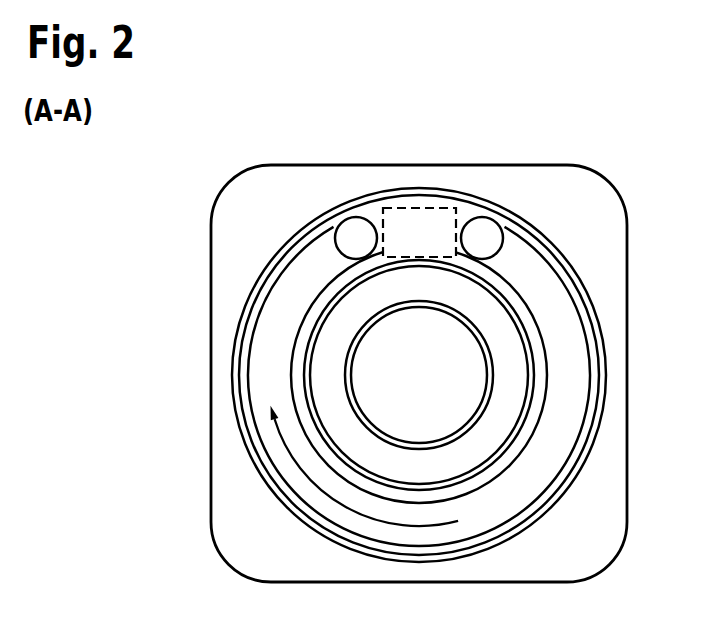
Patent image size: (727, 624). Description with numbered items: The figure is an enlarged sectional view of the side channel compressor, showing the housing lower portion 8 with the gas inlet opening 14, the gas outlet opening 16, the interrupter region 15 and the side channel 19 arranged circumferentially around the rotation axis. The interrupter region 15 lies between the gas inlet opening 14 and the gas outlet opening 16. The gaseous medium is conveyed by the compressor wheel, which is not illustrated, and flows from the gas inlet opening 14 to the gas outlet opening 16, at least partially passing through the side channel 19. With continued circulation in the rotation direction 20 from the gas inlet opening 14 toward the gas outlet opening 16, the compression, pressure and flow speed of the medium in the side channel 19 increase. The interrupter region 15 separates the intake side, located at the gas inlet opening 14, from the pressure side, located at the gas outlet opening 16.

The housing lower portion 8 is at (232, 285).
The gas inlet opening 14 is at (488, 242).
The interrupter region 15 is at (428, 212).
The gas outlet opening 16 is at (365, 233).
The side channel 19 is at (570, 372).
The rotation direction 20 is at (303, 470).